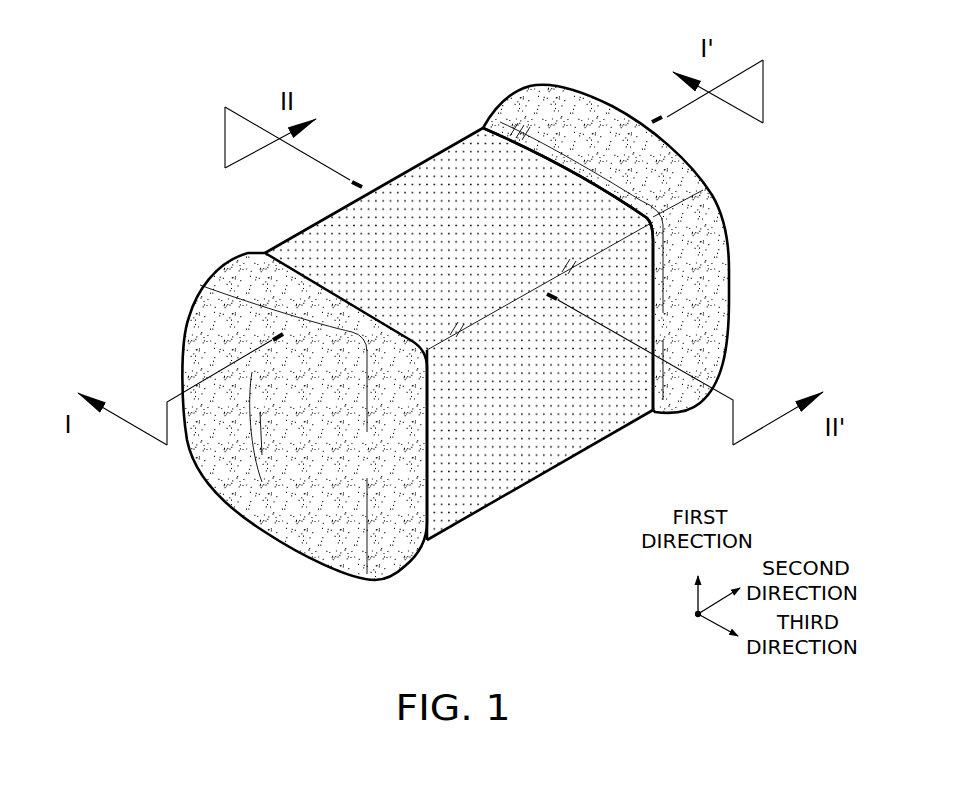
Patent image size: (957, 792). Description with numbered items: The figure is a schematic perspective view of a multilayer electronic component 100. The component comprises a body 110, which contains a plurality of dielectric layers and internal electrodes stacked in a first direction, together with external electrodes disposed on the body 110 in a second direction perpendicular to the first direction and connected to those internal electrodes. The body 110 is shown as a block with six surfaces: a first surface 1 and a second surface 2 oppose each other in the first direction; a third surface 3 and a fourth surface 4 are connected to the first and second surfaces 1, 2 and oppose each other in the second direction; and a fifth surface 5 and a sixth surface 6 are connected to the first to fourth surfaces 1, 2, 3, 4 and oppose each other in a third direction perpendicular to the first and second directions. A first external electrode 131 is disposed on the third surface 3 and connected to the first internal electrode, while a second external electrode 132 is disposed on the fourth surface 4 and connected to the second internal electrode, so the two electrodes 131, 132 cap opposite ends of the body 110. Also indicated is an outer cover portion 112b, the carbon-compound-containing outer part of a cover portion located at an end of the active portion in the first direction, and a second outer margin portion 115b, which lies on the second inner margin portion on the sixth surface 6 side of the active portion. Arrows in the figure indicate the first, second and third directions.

The multilayer electronic component 100 is at (304, 45).
The body 110 is at (457, 328).
The first external electrode 131 is at (298, 388).
The second external electrode 132 is at (626, 222).
The first surface 1 is at (491, 478).
The second surface 2 is at (467, 215).
The third surface 3 is at (286, 478).
The fourth surface 4 is at (702, 265).
The fifth surface 5 is at (385, 183).
The sixth surface 6 is at (521, 414).
The outer cover portion 112b is at (409, 214).
The second outer margin portion 115b is at (563, 382).